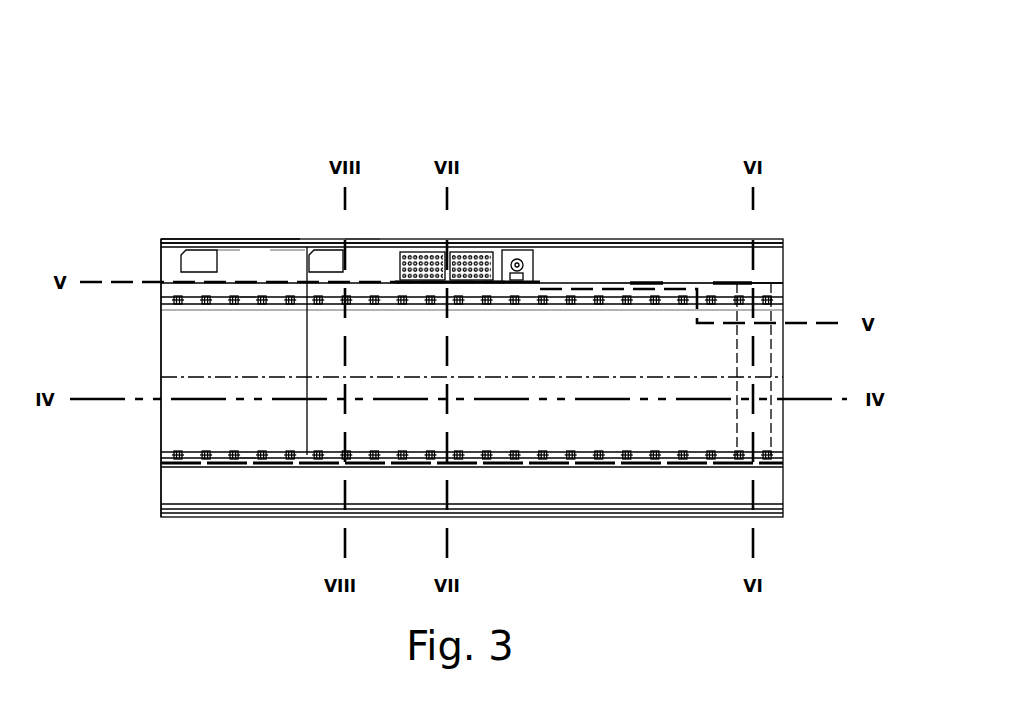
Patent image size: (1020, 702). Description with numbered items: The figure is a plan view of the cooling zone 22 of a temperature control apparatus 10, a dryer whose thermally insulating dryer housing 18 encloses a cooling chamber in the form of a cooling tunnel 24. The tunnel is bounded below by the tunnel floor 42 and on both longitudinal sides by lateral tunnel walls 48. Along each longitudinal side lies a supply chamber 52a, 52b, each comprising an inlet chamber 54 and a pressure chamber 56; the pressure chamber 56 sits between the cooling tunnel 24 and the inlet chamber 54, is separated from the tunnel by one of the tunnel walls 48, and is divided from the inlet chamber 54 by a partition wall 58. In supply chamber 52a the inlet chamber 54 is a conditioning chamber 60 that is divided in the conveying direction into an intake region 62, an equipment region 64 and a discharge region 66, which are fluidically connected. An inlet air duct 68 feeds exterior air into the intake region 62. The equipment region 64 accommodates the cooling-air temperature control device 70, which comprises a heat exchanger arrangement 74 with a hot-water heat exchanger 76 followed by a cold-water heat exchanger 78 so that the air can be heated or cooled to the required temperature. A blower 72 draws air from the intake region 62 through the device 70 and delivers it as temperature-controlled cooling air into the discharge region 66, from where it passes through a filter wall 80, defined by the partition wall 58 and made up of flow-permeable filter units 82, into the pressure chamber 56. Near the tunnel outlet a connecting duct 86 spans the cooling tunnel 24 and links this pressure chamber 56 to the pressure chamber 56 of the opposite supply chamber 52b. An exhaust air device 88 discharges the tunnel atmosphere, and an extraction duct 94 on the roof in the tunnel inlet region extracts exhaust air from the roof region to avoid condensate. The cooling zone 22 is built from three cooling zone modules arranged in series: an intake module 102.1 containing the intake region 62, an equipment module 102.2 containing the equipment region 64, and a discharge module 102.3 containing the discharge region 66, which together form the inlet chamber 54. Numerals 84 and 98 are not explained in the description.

The temperature control apparatus 10 is at (815, 100).
The dryer housing 18 is at (168, 240).
The cooling zone 22 is at (490, 530).
The cooling tunnel 24 is at (548, 432).
The tunnel floor 42 is at (180, 350).
The lateral tunnel walls 48 is at (175, 302).
The supply chamber 52a is at (150, 265).
The supply chamber 52b is at (150, 482).
The inlet chamber 54 is at (245, 258).
The pressure chamber 56 is at (241, 296).
The partition wall 58 is at (364, 277).
The conditioning chamber 60 is at (289, 256).
The intake region 62 is at (228, 246).
The equipment region 64 is at (492, 234).
The discharge region 66 is at (677, 259).
The inlet air duct 68 is at (193, 258).
The cooling-air temperature control device 70 is at (507, 237).
The blower 72 is at (537, 263).
The heat exchanger arrangement 74 is at (470, 232).
The hot-water heat exchanger 76 is at (418, 282).
The cold-water heat exchanger 78 is at (470, 282).
The filter wall 80 is at (770, 281).
The filter units 82 is at (635, 283).
The fastening bolt 84 is at (384, 305).
The connecting duct 86 is at (771, 358).
The exhaust air device 88 is at (360, 230).
The extraction duct 94 is at (317, 363).
The receptacle 98 is at (328, 250).
The intake module 102.1 is at (259, 230).
The equipment module 102.2 is at (427, 230).
The discharge module 102.3 is at (709, 230).